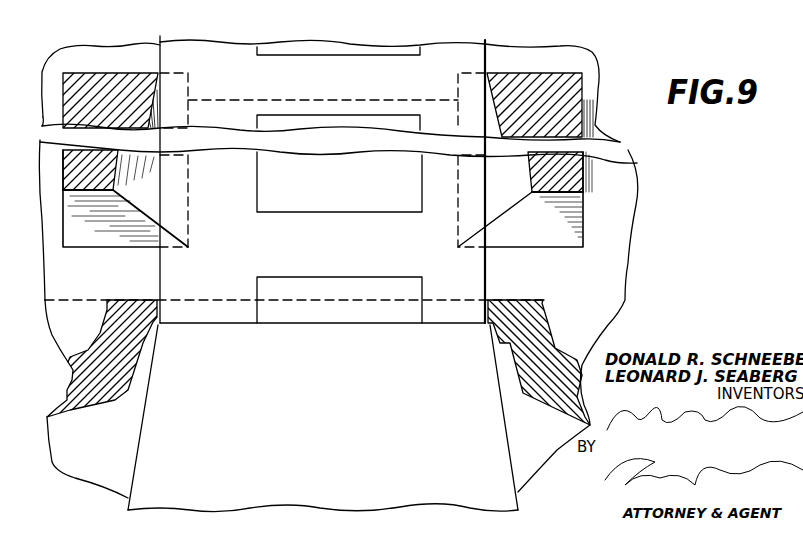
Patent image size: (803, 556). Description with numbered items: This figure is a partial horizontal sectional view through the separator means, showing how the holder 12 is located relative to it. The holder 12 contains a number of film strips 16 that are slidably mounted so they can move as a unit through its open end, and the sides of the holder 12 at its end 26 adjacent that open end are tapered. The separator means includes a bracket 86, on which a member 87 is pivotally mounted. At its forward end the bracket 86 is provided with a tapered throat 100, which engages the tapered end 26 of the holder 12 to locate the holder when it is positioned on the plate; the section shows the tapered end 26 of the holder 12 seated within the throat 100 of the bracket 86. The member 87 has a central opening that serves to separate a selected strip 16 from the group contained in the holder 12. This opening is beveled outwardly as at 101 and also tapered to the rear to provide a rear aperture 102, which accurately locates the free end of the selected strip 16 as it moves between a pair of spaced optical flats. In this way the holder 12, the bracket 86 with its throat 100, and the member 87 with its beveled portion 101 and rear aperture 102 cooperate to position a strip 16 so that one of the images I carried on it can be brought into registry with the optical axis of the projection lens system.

The holder 12 is at (330, 444).
The film strip 16 is at (188, 284).
The tapered end 26 is at (138, 413).
The bracket 86 is at (542, 328).
The member 87 is at (538, 76).
The tapered throat 100 is at (160, 323).
The beveled portion 101 is at (143, 213).
The rear aperture 102 is at (160, 72).
The image I is at (360, 202).